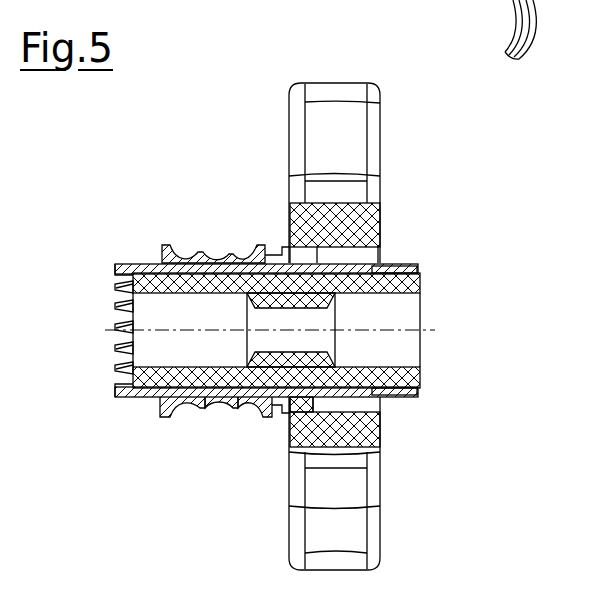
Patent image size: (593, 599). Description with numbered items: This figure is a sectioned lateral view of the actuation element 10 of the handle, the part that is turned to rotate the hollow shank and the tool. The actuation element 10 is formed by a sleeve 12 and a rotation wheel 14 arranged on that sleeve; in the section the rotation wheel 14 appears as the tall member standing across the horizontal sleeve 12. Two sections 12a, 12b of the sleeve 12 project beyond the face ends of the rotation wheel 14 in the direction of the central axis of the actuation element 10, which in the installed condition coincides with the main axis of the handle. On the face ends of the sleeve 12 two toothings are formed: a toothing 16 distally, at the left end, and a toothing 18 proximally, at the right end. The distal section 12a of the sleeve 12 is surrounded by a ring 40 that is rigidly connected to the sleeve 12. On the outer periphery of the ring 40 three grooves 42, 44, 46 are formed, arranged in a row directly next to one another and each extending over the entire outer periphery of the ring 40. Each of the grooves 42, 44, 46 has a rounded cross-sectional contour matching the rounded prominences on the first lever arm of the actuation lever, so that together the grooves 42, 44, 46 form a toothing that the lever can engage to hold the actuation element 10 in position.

The actuation element 10 is at (405, 208).
The sleeve 12 is at (147, 400).
The distal section of the sleeve 12a is at (145, 268).
The proximal section of the sleeve 12b is at (395, 397).
The rotation wheel 14 is at (335, 487).
The toothing 16 is at (113, 357).
The toothing 18 is at (405, 267).
The ring 40 is at (213, 258).
The groove 42 is at (243, 413).
The groove 44 is at (212, 413).
The groove 46 is at (183, 410).